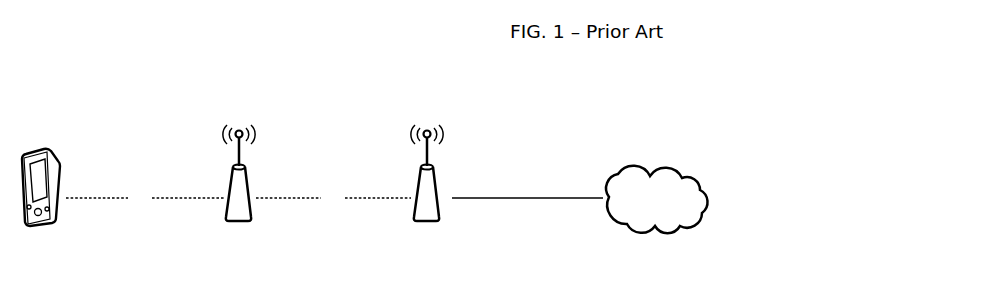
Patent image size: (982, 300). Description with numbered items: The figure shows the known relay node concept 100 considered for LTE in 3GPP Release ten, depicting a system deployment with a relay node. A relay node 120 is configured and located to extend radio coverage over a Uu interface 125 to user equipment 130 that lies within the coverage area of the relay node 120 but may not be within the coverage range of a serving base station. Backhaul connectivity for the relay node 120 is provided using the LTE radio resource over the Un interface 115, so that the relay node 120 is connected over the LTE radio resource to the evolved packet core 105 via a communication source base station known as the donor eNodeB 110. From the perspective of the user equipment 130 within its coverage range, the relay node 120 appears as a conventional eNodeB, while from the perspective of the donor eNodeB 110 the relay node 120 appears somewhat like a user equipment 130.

The relay node concept 100 is at (280, 95).
The evolved packet core (EPC) 105 is at (635, 163).
The donor eNodeB (DeNB) 110 is at (442, 125).
The Un interface 115 is at (330, 177).
The relay node (RN) 120 is at (250, 180).
The Uu interface 125 is at (129, 183).
The user equipment (UE) 130 is at (46, 150).